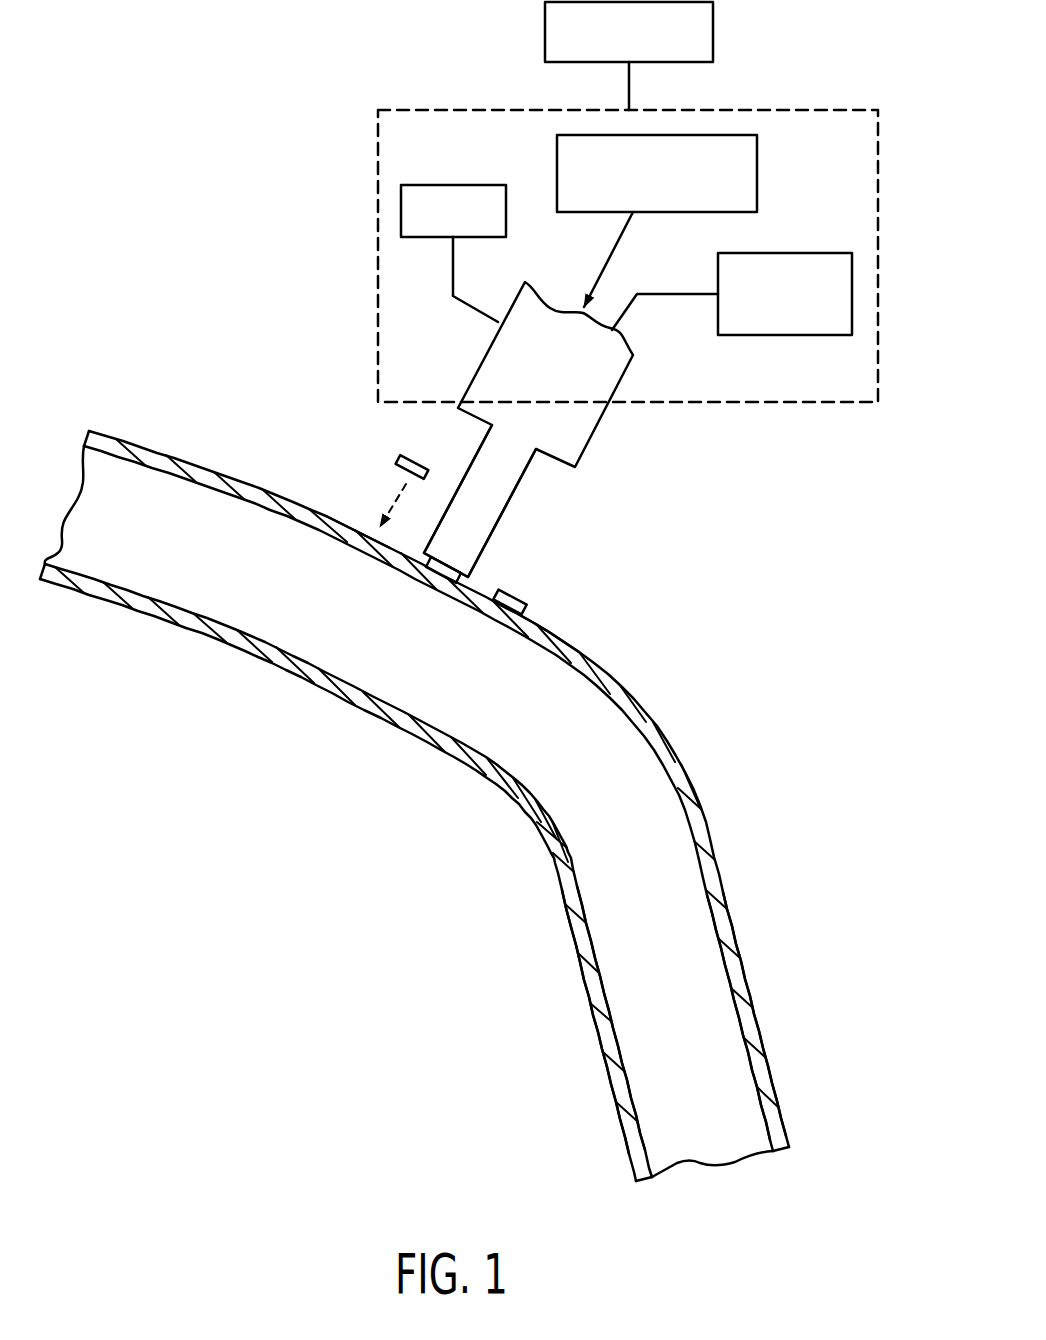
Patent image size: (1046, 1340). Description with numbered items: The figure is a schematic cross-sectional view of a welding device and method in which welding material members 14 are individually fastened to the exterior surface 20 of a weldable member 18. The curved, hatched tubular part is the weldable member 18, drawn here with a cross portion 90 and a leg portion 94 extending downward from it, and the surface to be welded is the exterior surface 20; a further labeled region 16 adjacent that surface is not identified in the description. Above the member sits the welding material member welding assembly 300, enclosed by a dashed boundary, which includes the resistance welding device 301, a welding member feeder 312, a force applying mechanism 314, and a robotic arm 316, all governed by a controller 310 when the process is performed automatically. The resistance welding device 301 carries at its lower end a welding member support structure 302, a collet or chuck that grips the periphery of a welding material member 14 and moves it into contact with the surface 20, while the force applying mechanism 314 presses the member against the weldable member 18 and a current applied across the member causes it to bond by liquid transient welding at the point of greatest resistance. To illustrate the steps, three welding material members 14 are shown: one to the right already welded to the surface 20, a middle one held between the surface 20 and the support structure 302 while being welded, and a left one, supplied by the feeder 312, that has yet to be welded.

The welding material member welding assembly 300 is at (436, 104).
The controller 310 is at (713, 37).
The force applying mechanism 314 is at (757, 163).
The welding member feeder 312 is at (428, 237).
The robotic arm 316 is at (812, 253).
The resistance welding device 301 is at (580, 428).
The welding member support structure 302 is at (470, 572).
The welding material member 14 is at (396, 459).
The cross portion 90 is at (123, 443).
The exterior surface 20 is at (363, 533).
The pipe wall outer surface 16 is at (545, 636).
The leg portion 94 is at (741, 986).
The weldable member 18 is at (594, 1054).